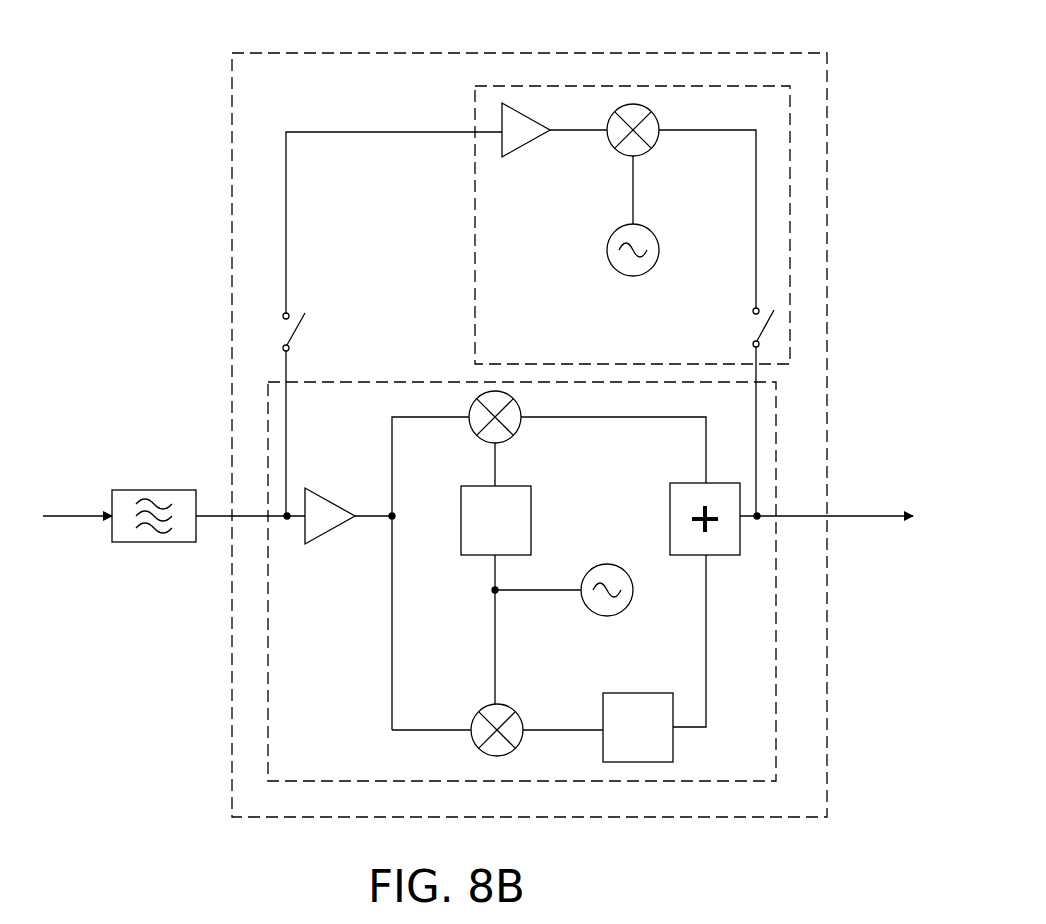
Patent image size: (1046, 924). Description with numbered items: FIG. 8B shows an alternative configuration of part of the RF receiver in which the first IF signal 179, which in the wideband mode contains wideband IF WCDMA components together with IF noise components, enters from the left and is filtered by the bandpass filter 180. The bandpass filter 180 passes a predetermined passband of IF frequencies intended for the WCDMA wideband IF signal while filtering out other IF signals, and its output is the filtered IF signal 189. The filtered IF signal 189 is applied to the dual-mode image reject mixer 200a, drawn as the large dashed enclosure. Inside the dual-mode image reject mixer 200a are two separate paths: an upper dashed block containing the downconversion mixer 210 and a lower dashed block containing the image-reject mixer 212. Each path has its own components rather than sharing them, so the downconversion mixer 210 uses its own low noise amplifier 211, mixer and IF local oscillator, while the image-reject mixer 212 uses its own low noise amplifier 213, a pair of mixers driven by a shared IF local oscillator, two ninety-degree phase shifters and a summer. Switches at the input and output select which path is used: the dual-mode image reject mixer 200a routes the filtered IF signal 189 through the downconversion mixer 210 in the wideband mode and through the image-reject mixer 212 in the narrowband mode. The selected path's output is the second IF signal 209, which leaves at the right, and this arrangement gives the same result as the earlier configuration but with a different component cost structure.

The first IF signal 179 is at (60, 516).
The bandpass filter 180 is at (165, 490).
The filtered IF signal 189 is at (208, 516).
The dual-mode image reject mixer 200a is at (232, 262).
The second IF signal 209 is at (843, 516).
The downconversion mixer 210 is at (583, 225).
The low noise amplifier 211 is at (520, 157).
The image-reject mixer 212 is at (522, 563).
The low noise amplifier 213 is at (350, 550).